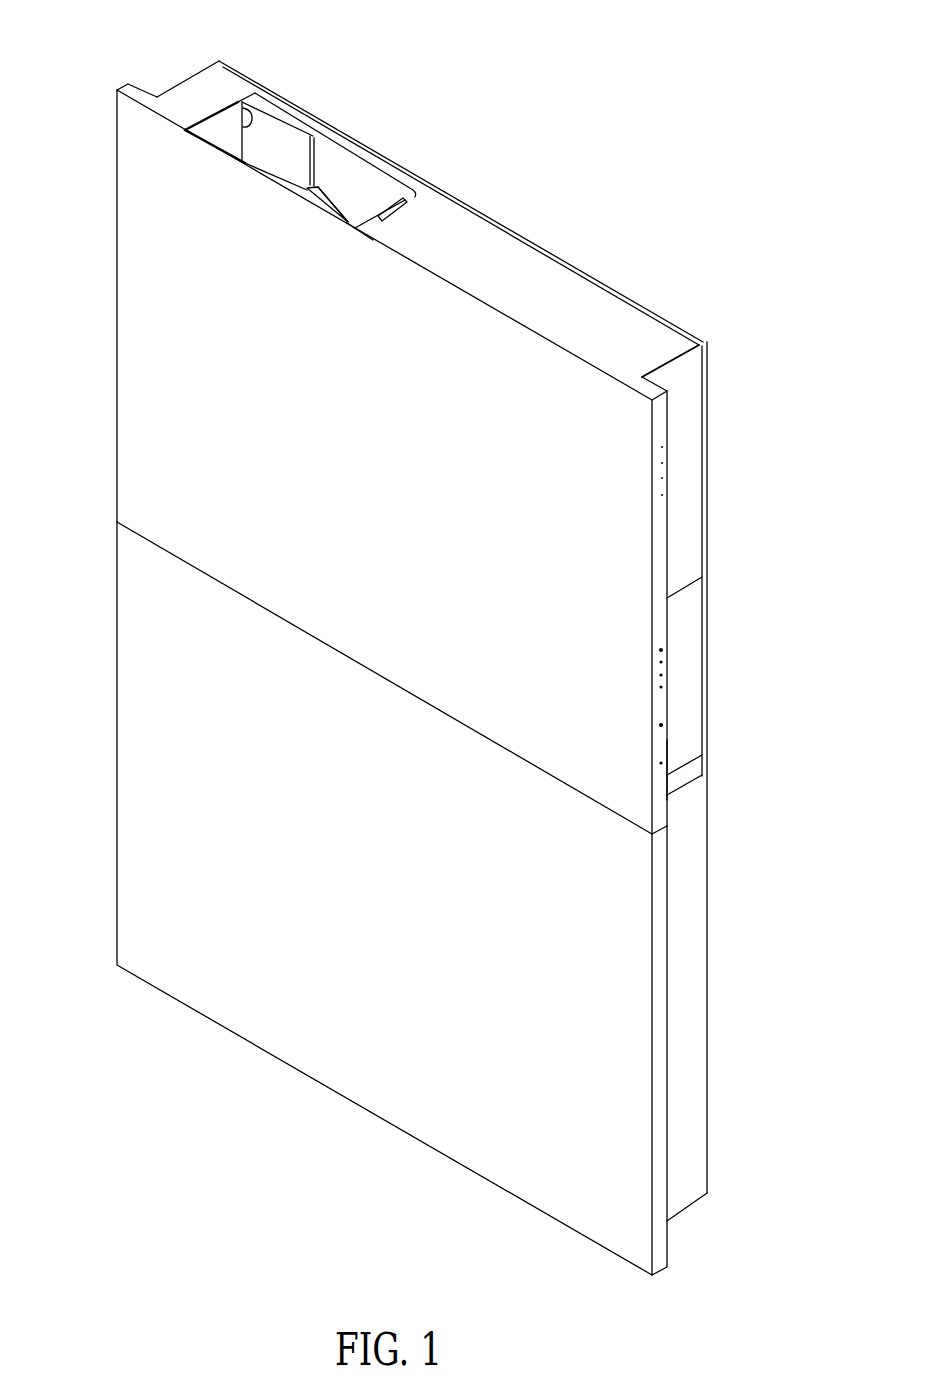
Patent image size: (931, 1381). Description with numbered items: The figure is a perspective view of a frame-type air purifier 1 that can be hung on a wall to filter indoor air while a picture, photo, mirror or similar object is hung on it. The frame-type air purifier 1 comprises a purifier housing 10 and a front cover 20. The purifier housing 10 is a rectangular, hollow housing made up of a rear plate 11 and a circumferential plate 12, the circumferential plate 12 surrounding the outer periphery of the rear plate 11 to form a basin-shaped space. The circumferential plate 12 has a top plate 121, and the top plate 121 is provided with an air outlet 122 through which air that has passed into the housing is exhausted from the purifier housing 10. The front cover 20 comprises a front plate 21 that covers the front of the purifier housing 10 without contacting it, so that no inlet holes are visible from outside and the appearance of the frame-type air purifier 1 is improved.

The frame-type air purifier 1 is at (100, 70).
The purifier housing 10 is at (638, 297).
The rear plate 11 is at (710, 605).
The circumferential plate 12 is at (683, 708).
The top plate 121 is at (497, 250).
The air outlet 122 is at (290, 137).
The front cover 20 is at (134, 777).
The front plate 21 is at (155, 659).